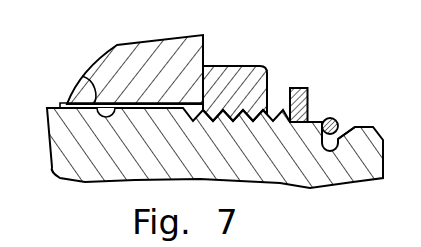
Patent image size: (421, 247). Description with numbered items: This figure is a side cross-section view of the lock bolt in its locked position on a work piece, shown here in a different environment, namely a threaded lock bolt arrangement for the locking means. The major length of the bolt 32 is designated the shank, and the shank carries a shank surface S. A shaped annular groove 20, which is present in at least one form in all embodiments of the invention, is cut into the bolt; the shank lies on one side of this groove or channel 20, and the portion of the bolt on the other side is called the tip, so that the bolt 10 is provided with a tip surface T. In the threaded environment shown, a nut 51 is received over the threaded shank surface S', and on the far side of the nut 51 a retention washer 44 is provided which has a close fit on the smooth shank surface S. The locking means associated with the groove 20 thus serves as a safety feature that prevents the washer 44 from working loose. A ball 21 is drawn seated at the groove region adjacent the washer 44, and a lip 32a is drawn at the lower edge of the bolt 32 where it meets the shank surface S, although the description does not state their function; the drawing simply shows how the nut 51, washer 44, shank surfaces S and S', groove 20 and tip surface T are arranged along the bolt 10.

The bolt 10 is at (62, 177).
The annular groove 20 is at (349, 125).
The ball 21 is at (331, 117).
The bolt 32 is at (101, 61).
The lip of cover member 32a is at (87, 79).
The retention washer 44 is at (296, 88).
The nut 51 is at (235, 67).
The shank surface S is at (112, 96).
The threaded shank surface S' is at (279, 77).
The tip surface T is at (363, 118).